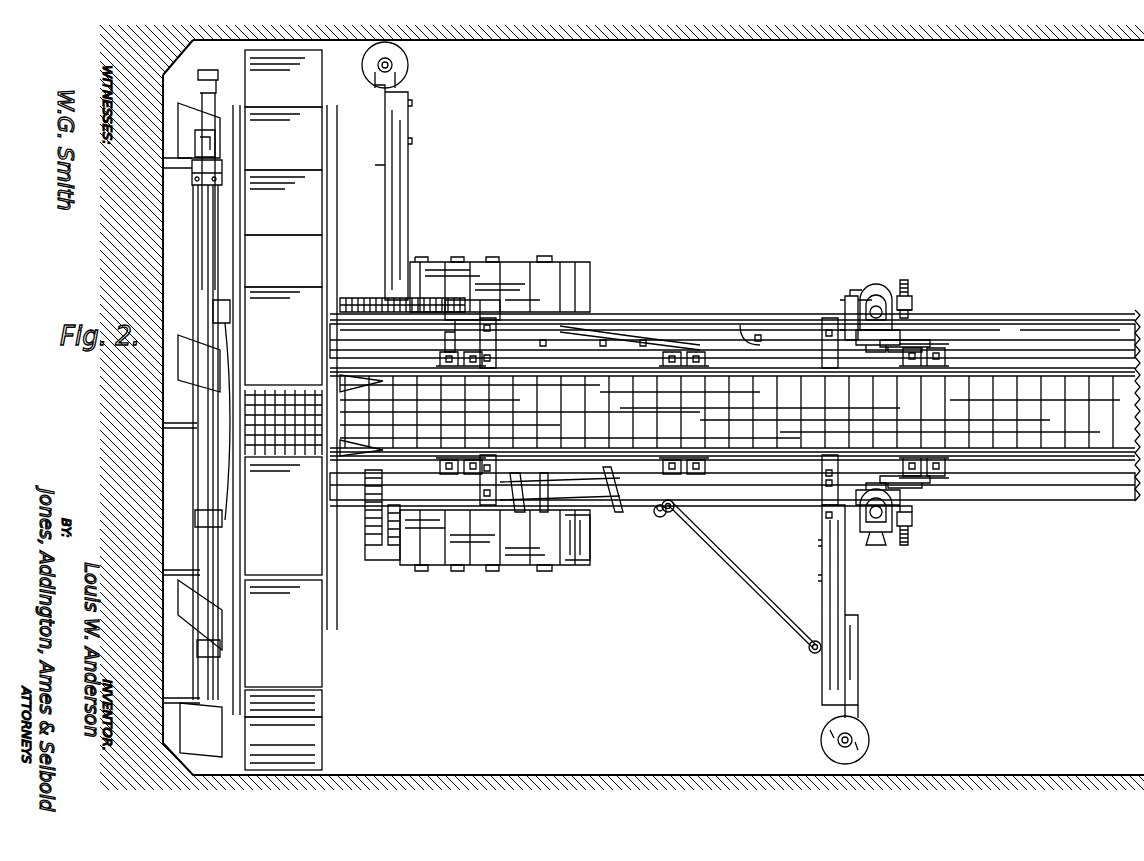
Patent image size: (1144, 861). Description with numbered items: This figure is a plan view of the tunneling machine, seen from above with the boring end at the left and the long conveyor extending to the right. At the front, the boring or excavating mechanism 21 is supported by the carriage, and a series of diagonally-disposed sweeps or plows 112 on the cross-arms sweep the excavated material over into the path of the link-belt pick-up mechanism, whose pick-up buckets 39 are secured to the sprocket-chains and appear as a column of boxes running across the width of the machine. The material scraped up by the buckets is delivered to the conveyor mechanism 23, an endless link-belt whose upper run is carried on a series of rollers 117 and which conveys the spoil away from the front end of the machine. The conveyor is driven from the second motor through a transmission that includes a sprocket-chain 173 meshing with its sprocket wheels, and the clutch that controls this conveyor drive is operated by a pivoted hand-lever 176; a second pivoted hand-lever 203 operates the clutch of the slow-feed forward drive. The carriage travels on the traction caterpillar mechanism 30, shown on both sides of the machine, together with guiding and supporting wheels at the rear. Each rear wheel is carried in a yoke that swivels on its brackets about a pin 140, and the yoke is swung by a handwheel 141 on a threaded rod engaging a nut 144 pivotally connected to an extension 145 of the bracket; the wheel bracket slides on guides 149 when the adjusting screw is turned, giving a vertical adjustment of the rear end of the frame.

The boring or excavating mechanism 21 is at (182, 302).
The conveyor mechanism 23 is at (735, 405).
The traction caterpillar mechanism 30 is at (474, 262).
The pick-up buckets 39 is at (285, 410).
The sweeps or plows 112 is at (192, 180).
The rollers 117 is at (690, 352).
The pin 140 is at (873, 300).
The handwheel 141 is at (918, 340).
The nut 144 is at (912, 300).
The extension 145 is at (912, 308).
The guides 149 is at (845, 312).
The sprocket-chain 173 is at (352, 298).
The hand-lever 176 is at (566, 556).
The hand-lever 203 is at (620, 513).